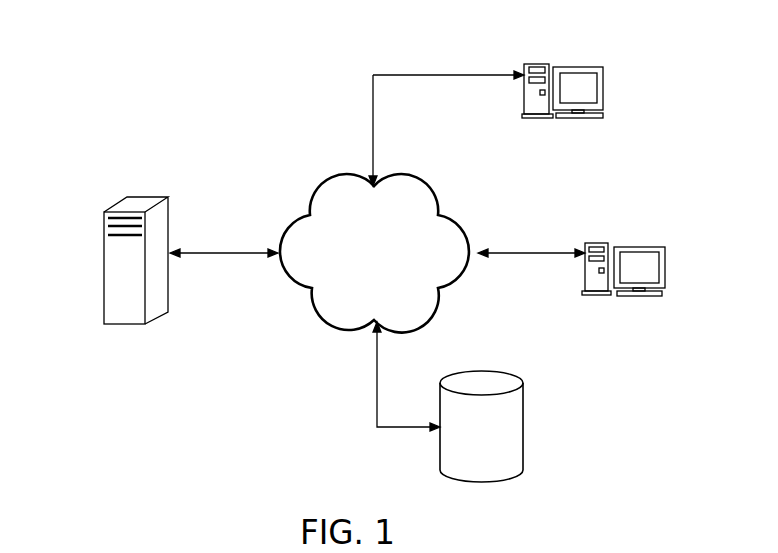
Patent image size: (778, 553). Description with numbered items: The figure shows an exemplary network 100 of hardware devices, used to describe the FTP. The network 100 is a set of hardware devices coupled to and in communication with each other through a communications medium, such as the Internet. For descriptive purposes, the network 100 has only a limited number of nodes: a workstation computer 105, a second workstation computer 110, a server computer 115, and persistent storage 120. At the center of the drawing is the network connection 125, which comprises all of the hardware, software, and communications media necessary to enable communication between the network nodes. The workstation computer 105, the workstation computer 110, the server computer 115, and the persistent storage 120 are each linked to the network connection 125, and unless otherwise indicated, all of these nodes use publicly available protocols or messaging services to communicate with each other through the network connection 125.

The exemplary network 100 is at (275, 145).
The workstation computer 105 is at (580, 67).
The workstation computer 110 is at (642, 247).
The server computer 115 is at (104, 232).
The persistent storage 120 is at (523, 418).
The network connection 125 is at (394, 269).